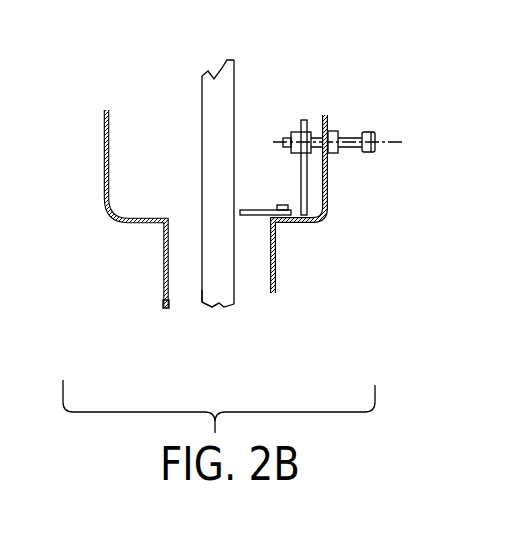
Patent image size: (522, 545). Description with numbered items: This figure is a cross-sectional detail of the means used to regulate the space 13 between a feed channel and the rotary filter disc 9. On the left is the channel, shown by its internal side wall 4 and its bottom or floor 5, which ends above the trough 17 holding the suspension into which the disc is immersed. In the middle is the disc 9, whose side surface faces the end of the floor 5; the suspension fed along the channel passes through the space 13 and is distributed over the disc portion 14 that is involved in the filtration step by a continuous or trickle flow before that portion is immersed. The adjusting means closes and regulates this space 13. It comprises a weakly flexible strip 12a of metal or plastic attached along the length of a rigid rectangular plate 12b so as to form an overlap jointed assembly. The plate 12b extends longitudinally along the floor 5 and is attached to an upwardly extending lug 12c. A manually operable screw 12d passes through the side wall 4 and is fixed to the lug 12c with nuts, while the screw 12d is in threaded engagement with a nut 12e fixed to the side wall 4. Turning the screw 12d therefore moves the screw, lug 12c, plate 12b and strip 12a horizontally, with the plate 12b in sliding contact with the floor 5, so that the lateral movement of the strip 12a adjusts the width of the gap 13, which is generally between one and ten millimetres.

The internal side wall 4 is at (332, 204).
The floor 5 is at (120, 224).
The disc 9 is at (215, 80).
The weakly flexible strip 12a is at (256, 210).
The rigid rectangular plate 12b is at (294, 224).
The upwardly extending lug 12c is at (308, 189).
The manually operable screw 12d is at (368, 131).
The nut 12e is at (337, 131).
The space 13 is at (240, 216).
The disc portion 14 is at (201, 291).
The trough 17 is at (163, 304).